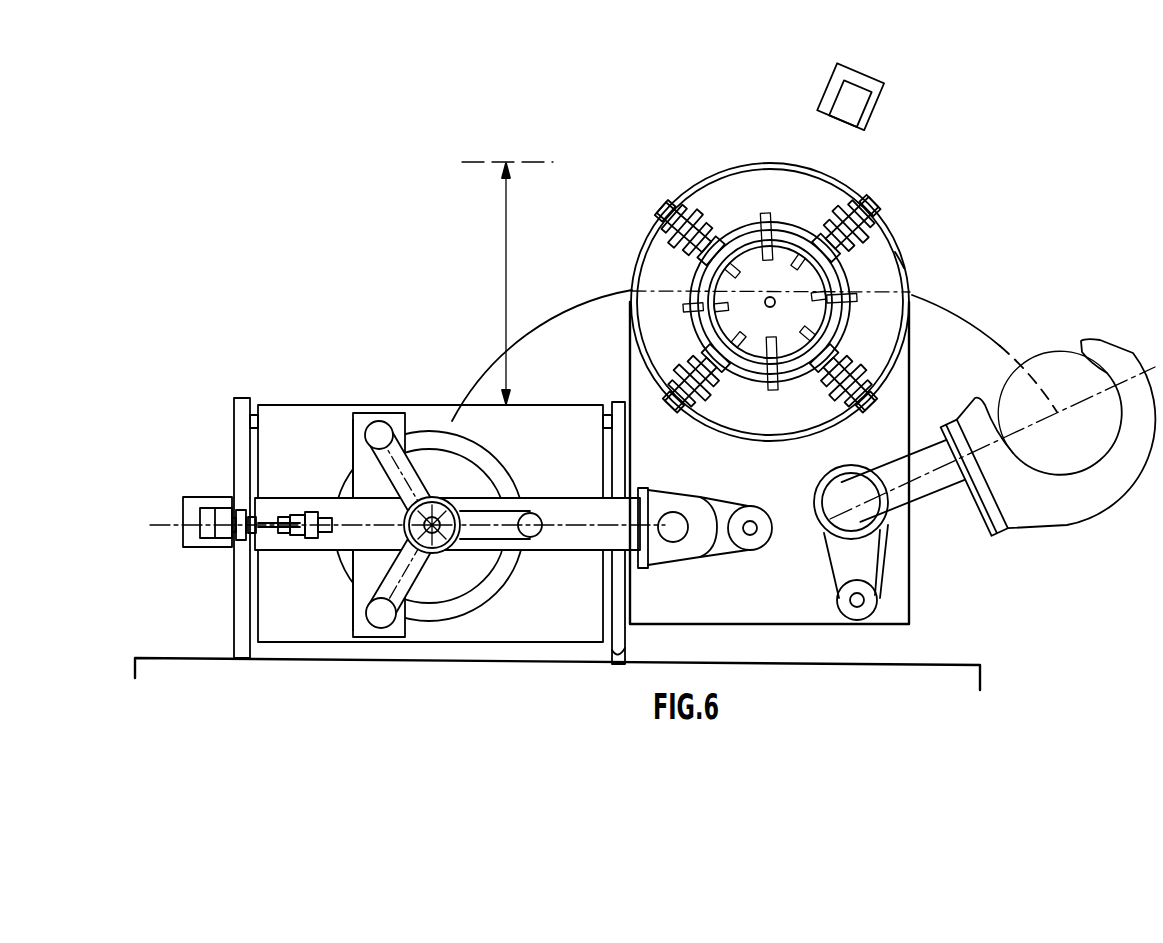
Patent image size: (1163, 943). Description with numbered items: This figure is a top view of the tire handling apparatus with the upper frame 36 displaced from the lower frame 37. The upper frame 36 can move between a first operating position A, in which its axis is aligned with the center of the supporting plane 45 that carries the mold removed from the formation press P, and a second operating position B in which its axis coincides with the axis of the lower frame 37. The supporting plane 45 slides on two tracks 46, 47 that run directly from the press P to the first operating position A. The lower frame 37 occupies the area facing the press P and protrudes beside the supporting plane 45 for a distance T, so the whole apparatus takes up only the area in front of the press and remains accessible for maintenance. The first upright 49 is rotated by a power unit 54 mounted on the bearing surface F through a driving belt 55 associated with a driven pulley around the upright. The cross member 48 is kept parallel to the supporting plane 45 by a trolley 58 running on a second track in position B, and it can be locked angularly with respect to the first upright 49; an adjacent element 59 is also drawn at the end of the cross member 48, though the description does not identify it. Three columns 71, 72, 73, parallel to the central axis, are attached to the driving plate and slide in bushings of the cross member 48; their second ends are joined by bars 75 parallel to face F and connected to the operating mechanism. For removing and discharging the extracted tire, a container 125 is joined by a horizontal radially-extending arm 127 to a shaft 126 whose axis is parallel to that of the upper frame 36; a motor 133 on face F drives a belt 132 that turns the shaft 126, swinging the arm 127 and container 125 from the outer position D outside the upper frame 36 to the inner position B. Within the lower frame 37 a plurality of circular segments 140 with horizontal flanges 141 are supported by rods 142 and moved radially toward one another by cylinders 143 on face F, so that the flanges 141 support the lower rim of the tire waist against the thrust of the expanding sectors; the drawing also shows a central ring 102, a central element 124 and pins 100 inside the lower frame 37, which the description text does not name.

The formation press P is at (960, 690).
The track 46 is at (236, 641).
The supporting plane 45 is at (297, 630).
The track 47 is at (605, 662).
The first operating position A is at (282, 430).
The second operating position B is at (915, 292).
The protruding distance T is at (507, 283).
The cross member 48 is at (314, 497).
The stop block 59 is at (205, 523).
The trolley 58 is at (248, 534).
The column 73 is at (379, 432).
The column 72 is at (375, 627).
The bars 75 is at (474, 515).
The upper frame 36 is at (447, 400).
The column 71 is at (540, 536).
The first upright 49 is at (685, 561).
The driving belt 55 is at (725, 551).
The power unit 54 is at (772, 531).
The lower frame 37 is at (906, 242).
The bearing surface F is at (904, 264).
The inner ring 102 is at (690, 306).
The center shaft 124 is at (768, 300).
The pins 100 is at (759, 214).
The circular segments 140 is at (731, 206).
The rods 142 is at (702, 210).
The cylinders 143 is at (666, 210).
The horizontal flanges 141 is at (688, 285).
The shaft 126 is at (830, 472).
The belt 132 is at (893, 560).
The motor 133 is at (878, 601).
The radially-extending arm 127 is at (938, 505).
The outer position D is at (1084, 335).
The container 125 is at (1068, 455).